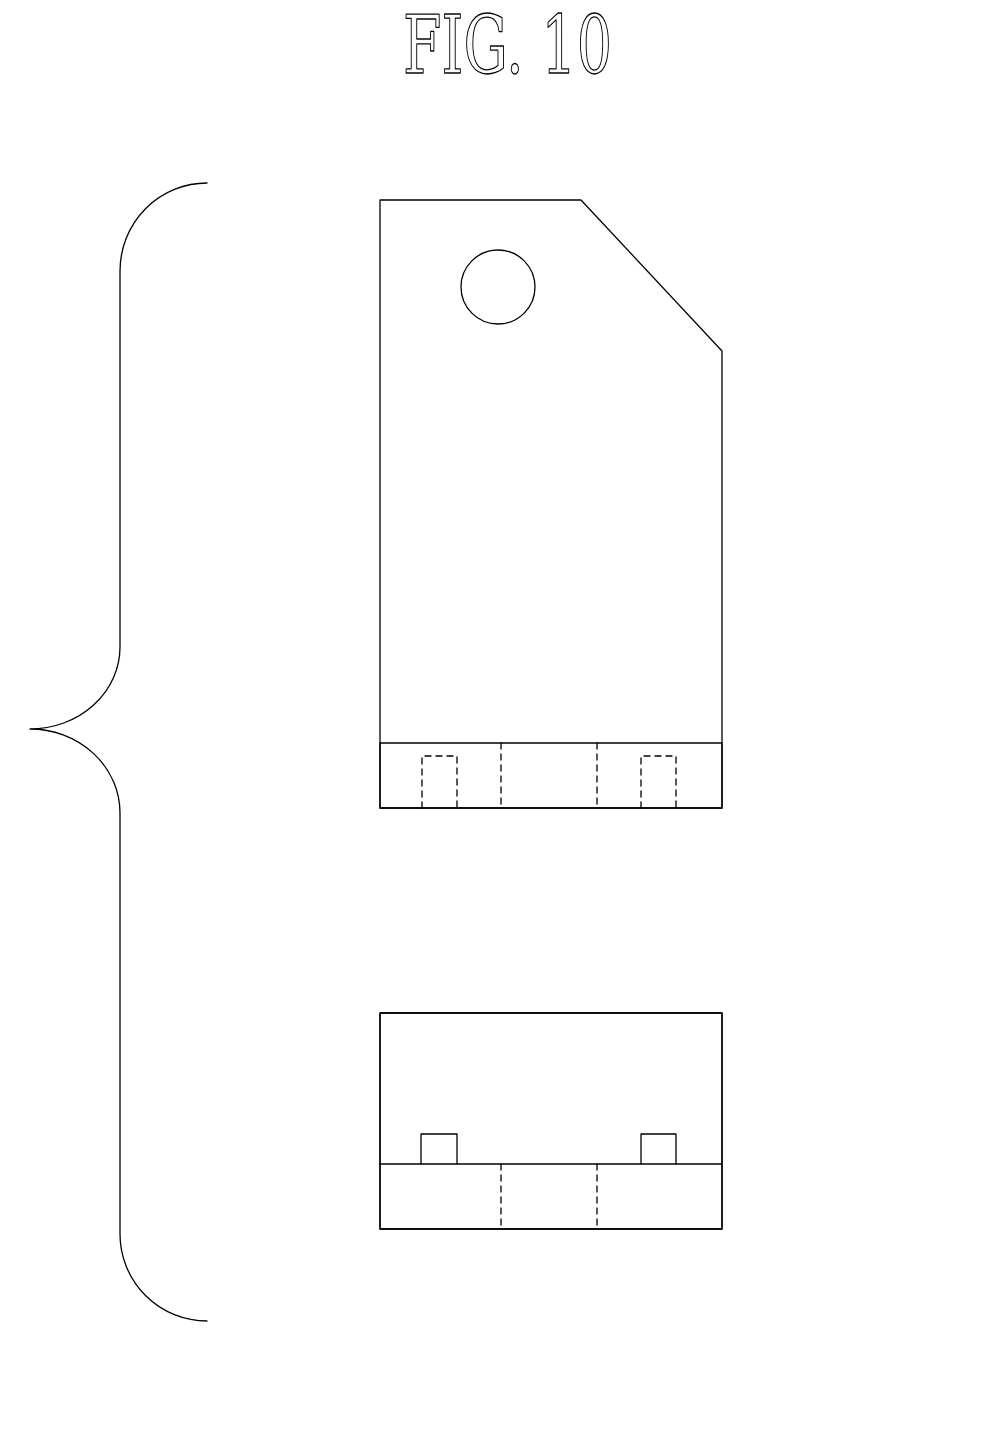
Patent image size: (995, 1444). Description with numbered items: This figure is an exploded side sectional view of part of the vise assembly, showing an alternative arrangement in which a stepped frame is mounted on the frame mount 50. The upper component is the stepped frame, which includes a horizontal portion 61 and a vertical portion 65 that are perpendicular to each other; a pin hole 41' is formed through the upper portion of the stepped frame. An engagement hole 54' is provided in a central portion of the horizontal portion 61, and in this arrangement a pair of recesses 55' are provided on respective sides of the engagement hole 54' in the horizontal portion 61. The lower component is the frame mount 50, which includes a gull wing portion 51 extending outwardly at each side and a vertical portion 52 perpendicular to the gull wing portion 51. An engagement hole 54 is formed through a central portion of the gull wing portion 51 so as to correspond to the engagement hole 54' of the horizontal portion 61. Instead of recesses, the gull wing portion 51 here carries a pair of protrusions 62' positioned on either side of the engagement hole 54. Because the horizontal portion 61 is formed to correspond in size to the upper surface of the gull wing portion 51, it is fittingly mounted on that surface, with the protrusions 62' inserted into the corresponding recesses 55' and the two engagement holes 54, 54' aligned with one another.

The pin hole 41' is at (405, 294).
The vertical portion 65 is at (700, 540).
The horizontal portion 61 is at (700, 786).
The engagement hole 54' is at (648, 724).
The recesses 55' is at (561, 765).
The frame mount 50 is at (768, 1007).
The vertical portion 52 is at (420, 1067).
The gull wing portion 51 is at (723, 1198).
The engagement hole 54 is at (583, 1239).
The protrusions 62' is at (544, 1123).